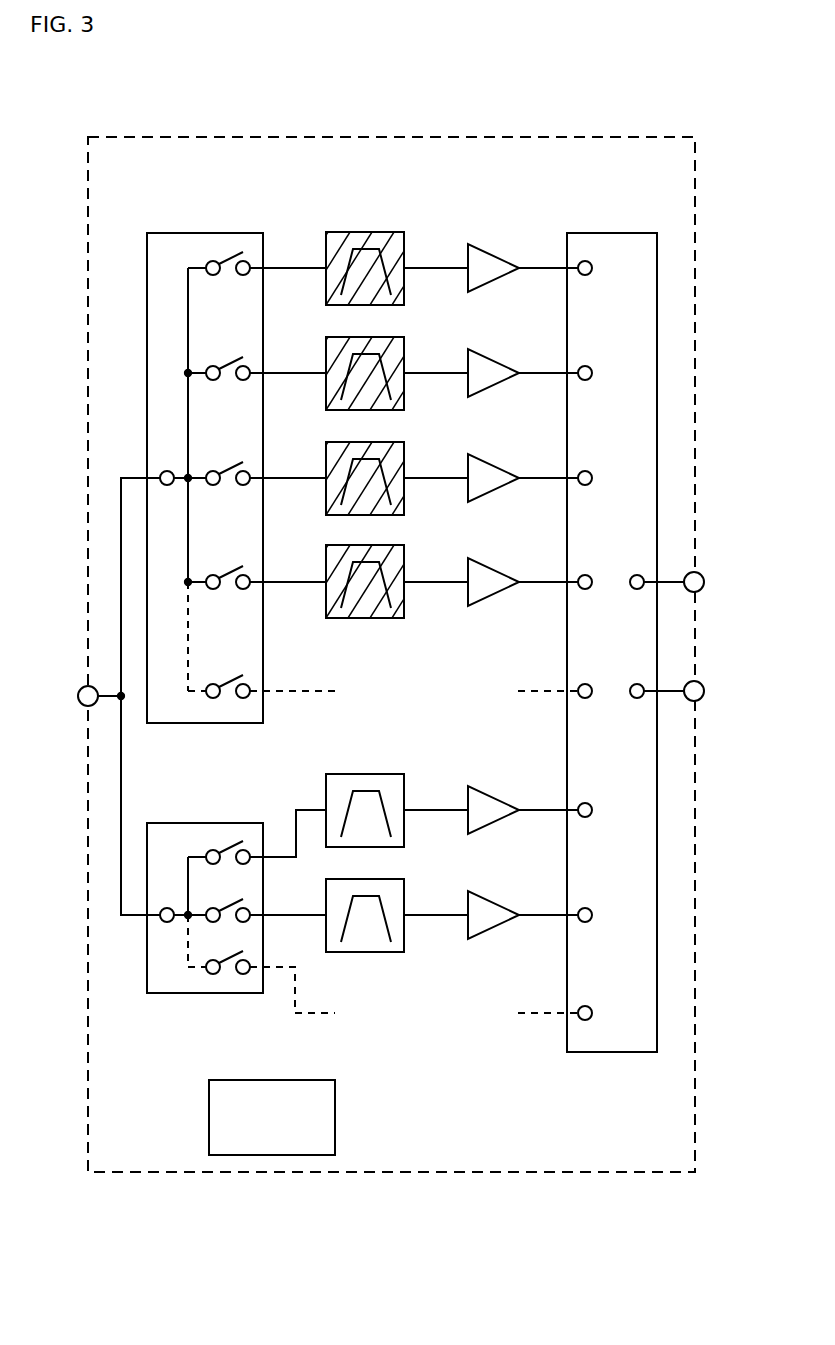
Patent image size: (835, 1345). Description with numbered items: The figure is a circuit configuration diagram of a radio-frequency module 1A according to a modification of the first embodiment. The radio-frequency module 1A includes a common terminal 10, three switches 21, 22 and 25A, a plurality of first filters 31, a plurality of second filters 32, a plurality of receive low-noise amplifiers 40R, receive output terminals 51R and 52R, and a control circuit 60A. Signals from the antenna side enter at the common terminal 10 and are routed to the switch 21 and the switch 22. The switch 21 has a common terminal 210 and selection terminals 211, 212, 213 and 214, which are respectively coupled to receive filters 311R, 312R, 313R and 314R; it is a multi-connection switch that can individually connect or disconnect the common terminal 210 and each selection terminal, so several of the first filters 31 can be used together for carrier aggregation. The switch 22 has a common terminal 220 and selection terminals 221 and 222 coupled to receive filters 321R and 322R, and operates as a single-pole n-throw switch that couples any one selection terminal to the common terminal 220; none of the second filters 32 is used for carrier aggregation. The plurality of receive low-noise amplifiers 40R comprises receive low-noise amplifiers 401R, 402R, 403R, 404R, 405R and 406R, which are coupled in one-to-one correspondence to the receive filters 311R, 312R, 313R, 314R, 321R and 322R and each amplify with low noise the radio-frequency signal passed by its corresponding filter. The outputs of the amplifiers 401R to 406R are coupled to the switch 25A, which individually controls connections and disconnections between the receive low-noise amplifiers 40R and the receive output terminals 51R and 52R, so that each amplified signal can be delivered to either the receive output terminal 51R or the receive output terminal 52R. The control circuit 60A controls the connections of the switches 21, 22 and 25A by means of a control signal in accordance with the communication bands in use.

The radio-frequency module 1A is at (408, 137).
The common terminal 10 is at (80, 688).
The switch 21 is at (216, 455).
The switch 22 is at (215, 894).
The switch 25A is at (620, 233).
The plurality of first filters 31 is at (373, 417).
The plurality of second filters 32 is at (373, 850).
The plurality of receive low-noise amplifiers 40R is at (491, 414).
The receive output terminal 51R is at (702, 590).
The receive output terminal 52R is at (702, 699).
The control circuit 60A is at (335, 1117).
The common terminal 210 is at (160, 471).
The selection terminal 211 is at (250, 263).
The selection terminal 212 is at (250, 368).
The selection terminal 213 is at (250, 473).
The selection terminal 214 is at (250, 577).
The common terminal 220 is at (160, 925).
The selection terminal 221 is at (249, 862).
The selection terminal 222 is at (249, 920).
The receive filter 311R is at (378, 305).
The receive filter 312R is at (378, 410).
The receive filter 313R is at (378, 515).
The receive filter 314R is at (378, 618).
The receive filter 321R is at (378, 847).
The receive filter 322R is at (378, 952).
The receive low-noise amplifier 401R is at (483, 286).
The receive low-noise amplifier 402R is at (483, 391).
The receive low-noise amplifier 403R is at (483, 496).
The receive low-noise amplifier 404R is at (483, 600).
The receive low-noise amplifier 405R is at (483, 828).
The receive low-noise amplifier 406R is at (483, 933).